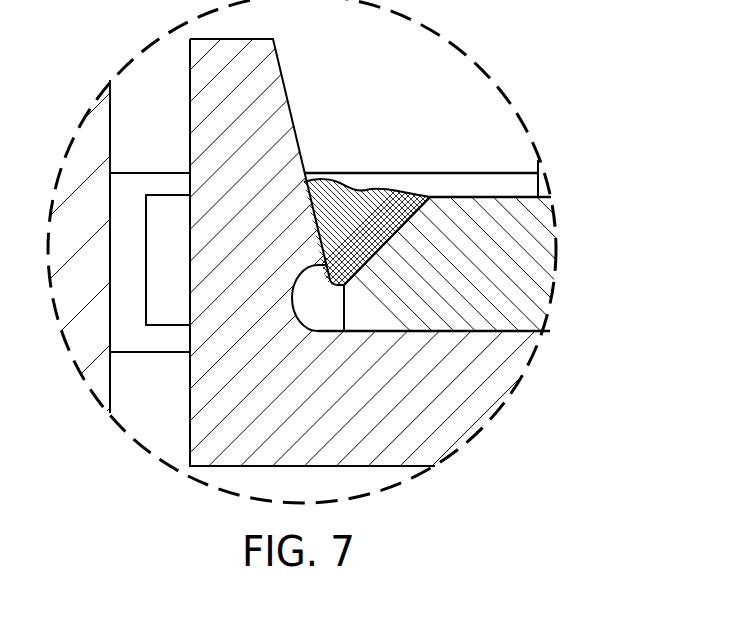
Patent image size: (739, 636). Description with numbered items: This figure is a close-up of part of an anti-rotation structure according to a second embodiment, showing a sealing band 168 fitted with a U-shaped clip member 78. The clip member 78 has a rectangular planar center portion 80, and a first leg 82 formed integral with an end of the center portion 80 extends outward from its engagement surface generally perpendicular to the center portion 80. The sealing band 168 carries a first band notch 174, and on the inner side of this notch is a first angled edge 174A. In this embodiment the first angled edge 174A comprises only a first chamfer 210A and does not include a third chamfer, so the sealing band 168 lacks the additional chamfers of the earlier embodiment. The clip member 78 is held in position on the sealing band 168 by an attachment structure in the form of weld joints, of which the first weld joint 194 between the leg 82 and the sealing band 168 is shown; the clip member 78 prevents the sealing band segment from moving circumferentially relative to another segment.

The clip member 78 is at (178, 413).
The center portion 80 is at (477, 399).
The first leg 82 is at (212, 84).
The sealing band 168 is at (538, 262).
The first band notch 174 is at (152, 210).
The first angled edge 174A is at (411, 204).
The first weld joint 194 is at (323, 182).
The first chamfer 210A is at (378, 228).